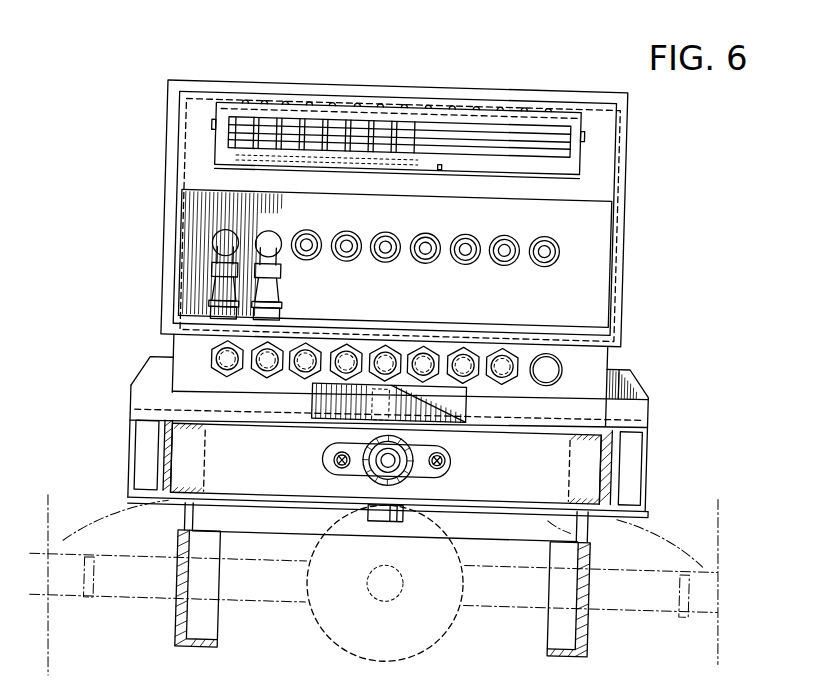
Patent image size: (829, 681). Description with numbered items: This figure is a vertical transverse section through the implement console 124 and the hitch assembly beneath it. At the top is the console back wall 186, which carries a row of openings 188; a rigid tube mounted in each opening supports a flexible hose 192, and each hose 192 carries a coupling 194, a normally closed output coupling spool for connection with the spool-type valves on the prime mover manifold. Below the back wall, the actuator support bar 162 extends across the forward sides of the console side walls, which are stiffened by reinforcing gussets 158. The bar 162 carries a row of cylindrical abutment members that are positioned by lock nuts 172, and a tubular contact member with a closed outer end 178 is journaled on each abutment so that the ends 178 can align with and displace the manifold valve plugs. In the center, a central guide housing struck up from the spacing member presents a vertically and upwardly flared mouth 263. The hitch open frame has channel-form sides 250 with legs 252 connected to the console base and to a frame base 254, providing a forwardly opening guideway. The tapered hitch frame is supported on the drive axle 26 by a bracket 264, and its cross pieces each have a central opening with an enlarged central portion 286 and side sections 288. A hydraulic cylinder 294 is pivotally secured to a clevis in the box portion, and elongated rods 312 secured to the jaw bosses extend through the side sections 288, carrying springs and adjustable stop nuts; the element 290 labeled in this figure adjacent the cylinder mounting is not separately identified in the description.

The console 124 is at (433, 214).
The console back wall 186 is at (556, 293).
The openings 188 is at (425, 248).
The flexible hose 192 is at (299, 231).
The couplings 194 is at (288, 280).
The lock nuts 172 is at (181, 381).
The closed outer end 178 is at (244, 367).
The actuator support bar 162 is at (573, 379).
The reinforcing gussets 158 is at (632, 377).
The flared mouth 263 is at (426, 417).
The bracket 290 is at (409, 400).
The hydraulic cylinder 294 is at (395, 465).
The elongated rod 312 is at (343, 456).
The side section 288 is at (457, 454).
The enlarged central portion 286 is at (423, 472).
The sides 250 is at (168, 459).
The legs 252 is at (639, 487).
The frame base 254 is at (657, 500).
The bracket 264 is at (190, 525).
The drive axle 26 is at (660, 590).